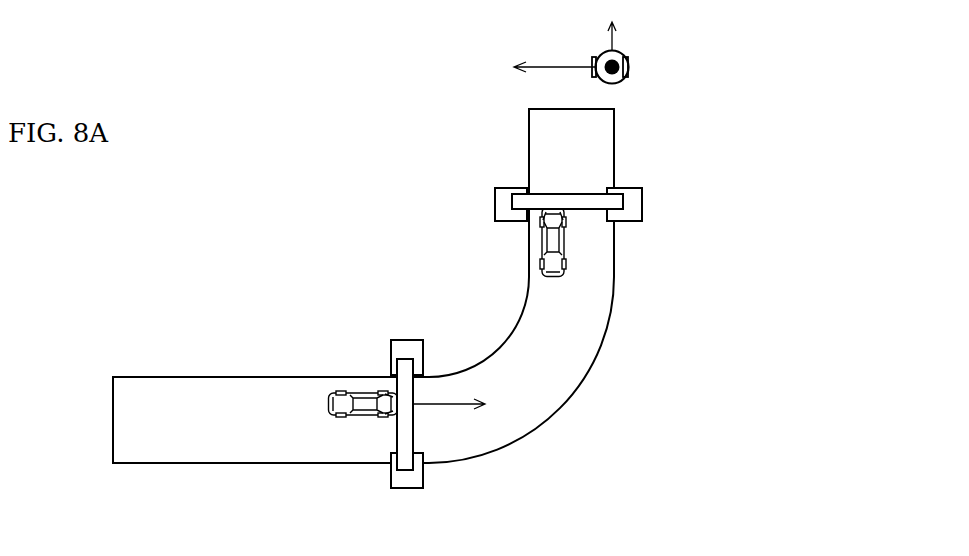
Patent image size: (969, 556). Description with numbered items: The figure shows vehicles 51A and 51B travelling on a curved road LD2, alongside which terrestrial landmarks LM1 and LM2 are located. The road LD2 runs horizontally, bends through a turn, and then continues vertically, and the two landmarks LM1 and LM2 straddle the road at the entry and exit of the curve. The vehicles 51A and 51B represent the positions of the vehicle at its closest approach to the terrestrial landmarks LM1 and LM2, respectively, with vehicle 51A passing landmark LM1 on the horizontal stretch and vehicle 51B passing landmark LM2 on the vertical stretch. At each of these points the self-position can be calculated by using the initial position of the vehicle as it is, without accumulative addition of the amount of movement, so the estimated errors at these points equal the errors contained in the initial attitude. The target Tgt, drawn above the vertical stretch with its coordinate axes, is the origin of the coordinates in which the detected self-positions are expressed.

The curved road LD2 is at (188, 376).
The terrestrial landmark LM1 is at (408, 339).
The terrestrial landmark LM2 is at (643, 207).
The vehicle 51A is at (328, 404).
The vehicle 51B is at (568, 240).
The target Tgt is at (630, 68).